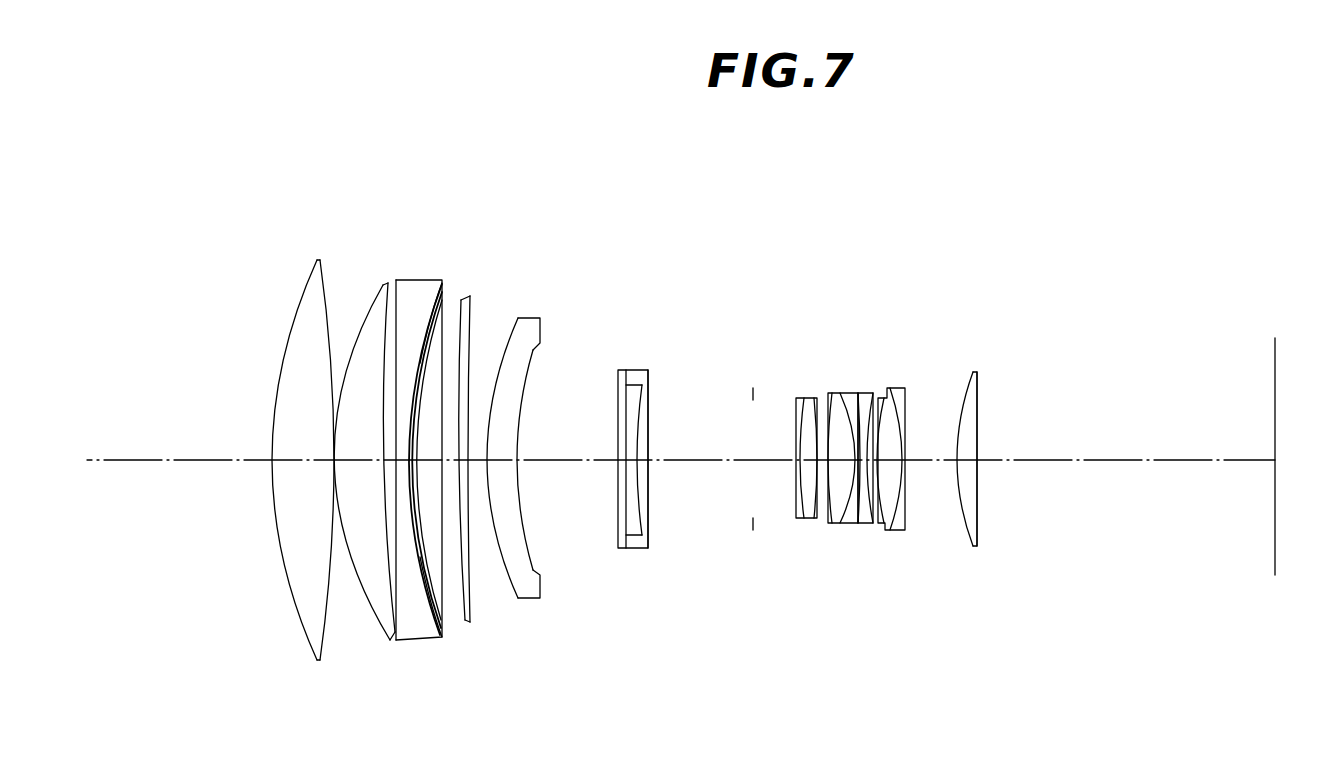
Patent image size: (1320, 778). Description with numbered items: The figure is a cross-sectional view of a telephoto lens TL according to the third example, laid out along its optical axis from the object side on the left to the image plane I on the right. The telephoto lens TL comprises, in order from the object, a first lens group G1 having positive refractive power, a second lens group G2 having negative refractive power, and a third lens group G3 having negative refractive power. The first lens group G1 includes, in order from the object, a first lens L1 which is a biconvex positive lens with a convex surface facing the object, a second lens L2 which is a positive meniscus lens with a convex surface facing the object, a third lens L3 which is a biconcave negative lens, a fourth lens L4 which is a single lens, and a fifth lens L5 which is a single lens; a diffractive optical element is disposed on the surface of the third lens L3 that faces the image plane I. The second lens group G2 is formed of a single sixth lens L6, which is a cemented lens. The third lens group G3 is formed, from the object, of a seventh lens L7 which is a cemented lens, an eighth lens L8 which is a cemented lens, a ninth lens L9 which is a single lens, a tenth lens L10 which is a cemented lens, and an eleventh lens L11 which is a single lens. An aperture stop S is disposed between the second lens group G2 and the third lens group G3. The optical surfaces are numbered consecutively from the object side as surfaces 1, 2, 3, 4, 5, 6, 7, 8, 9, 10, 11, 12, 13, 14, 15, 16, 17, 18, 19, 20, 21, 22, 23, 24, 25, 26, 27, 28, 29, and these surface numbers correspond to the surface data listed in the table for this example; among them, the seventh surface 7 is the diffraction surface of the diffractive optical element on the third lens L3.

The telephoto lens TL is at (1125, 210).
The first lens group G1 is at (562, 715).
The second lens group G2 is at (613, 715).
The third lens group G3 is at (778, 648).
The first lens L1 is at (317, 663).
The second lens L2 is at (390, 643).
The third lens L3 is at (422, 641).
The fourth lens L4 is at (468, 623).
The fifth lens L5 is at (528, 600).
The sixth lens L6 is at (620, 549).
The seventh lens L7 is at (798, 520).
The eighth lens L8 is at (832, 525).
The ninth lens L9 is at (864, 525).
The tenth lens L10 is at (886, 531).
The eleventh lens L11 is at (974, 549).
The aperture stop S is at (753, 528).
The image plane I is at (1275, 365).
The surface 1 is at (316, 262).
The surface 2 is at (323, 268).
The surface 3 is at (383, 287).
The surface 4 is at (390, 283).
The surface 5 is at (401, 300).
The surface 6 is at (440, 282).
The surface 7 is at (421, 362).
The surface 8 is at (445, 300).
The surface 9 is at (461, 298).
The surface 10 is at (472, 312).
The surface 11 is at (515, 330).
The surface 12 is at (541, 343).
The surface 13 is at (618, 380).
The surface 14 is at (642, 385).
The surface 15 is at (648, 385).
The surface 16 is at (753, 393).
The surface 17 is at (797, 403).
The surface 18 is at (804, 400).
The surface 19 is at (815, 398).
The surface 20 is at (832, 393).
The surface 21 is at (841, 393).
The surface 22 is at (858, 393).
The surface 23 is at (872, 394).
The surface 24 is at (880, 407).
The surface 25 is at (887, 407).
The surface 26 is at (905, 398).
The surface 27 is at (958, 430).
The surface 28 is at (977, 372).
The surface 29 is at (978, 382).